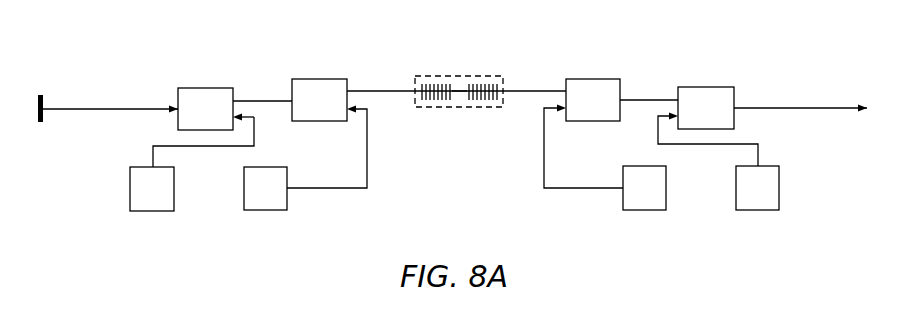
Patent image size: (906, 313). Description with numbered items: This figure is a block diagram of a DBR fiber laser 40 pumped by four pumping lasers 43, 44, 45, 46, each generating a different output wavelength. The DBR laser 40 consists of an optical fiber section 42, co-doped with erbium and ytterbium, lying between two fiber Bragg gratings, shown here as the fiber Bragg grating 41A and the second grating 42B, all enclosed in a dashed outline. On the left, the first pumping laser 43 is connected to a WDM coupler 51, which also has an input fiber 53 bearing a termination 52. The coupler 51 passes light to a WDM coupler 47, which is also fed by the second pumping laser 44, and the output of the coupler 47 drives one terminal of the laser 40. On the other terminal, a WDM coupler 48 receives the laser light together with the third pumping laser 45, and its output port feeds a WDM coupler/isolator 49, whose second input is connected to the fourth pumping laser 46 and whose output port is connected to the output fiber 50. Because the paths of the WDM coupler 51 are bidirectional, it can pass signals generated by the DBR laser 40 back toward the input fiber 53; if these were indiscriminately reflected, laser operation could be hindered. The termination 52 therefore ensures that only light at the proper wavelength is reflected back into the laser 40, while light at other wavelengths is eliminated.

The DBR laser 40 is at (437, 76).
The fiber Bragg grating 41A is at (435, 101).
The optical fiber section 42 is at (459, 90).
The second fiber grating 42B is at (482, 101).
The first pumping laser 43 is at (140, 167).
The second pumping laser 44 is at (244, 188).
The third pumping laser 45 is at (666, 188).
The fourth pumping laser 46 is at (770, 166).
The WDM coupler 47 is at (314, 79).
The WDM coupler 48 is at (595, 79).
The WDM coupler/isolator 49 is at (707, 87).
The output fiber 50 is at (818, 106).
The WDM coupler 51 is at (203, 88).
The termination 52 is at (42, 95).
The input fiber 53 is at (93, 108).